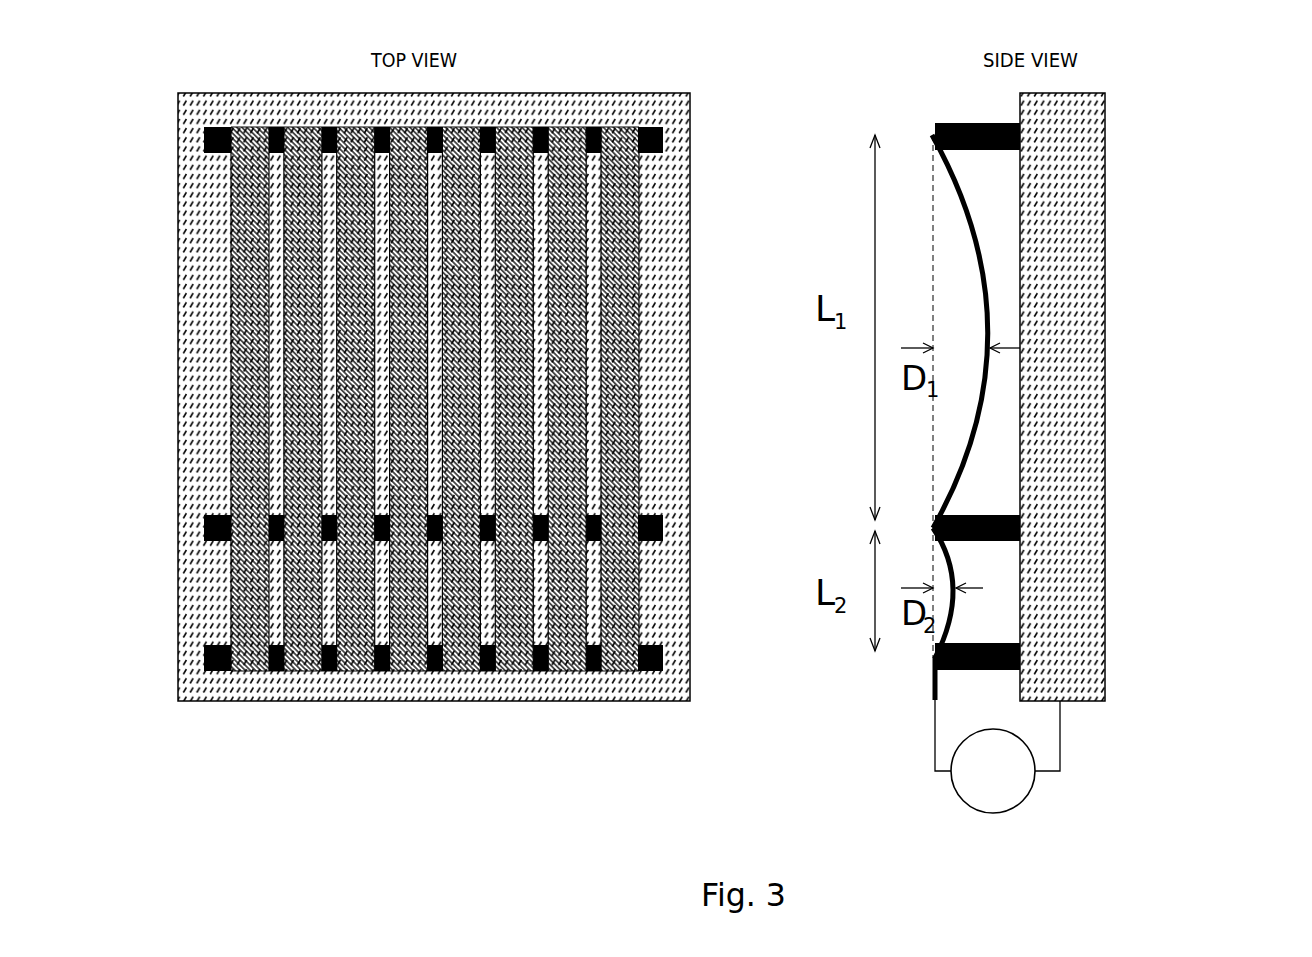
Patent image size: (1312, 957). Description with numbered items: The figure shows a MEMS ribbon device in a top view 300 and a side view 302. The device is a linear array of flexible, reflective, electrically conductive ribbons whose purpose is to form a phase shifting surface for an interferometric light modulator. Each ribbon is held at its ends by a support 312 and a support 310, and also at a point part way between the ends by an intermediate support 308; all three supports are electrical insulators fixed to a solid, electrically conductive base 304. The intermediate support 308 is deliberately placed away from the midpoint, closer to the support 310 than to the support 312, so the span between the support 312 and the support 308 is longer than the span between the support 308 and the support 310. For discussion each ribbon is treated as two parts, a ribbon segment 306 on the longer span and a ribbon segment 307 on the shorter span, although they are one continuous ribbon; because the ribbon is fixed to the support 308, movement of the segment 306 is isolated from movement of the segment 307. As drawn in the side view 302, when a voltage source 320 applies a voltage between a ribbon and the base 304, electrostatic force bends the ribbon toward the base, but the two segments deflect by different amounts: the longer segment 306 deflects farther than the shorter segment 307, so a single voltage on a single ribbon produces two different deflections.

The top view 300 is at (141, 770).
The side view 302 is at (1217, 761).
The base 304 is at (190, 212).
The ribbon segment 306 is at (236, 321).
The ribbon segment 307 is at (236, 570).
The intermediate support 308 is at (196, 510).
The support 310 is at (196, 648).
The support 312 is at (196, 133).
The voltage source 320 is at (1037, 783).